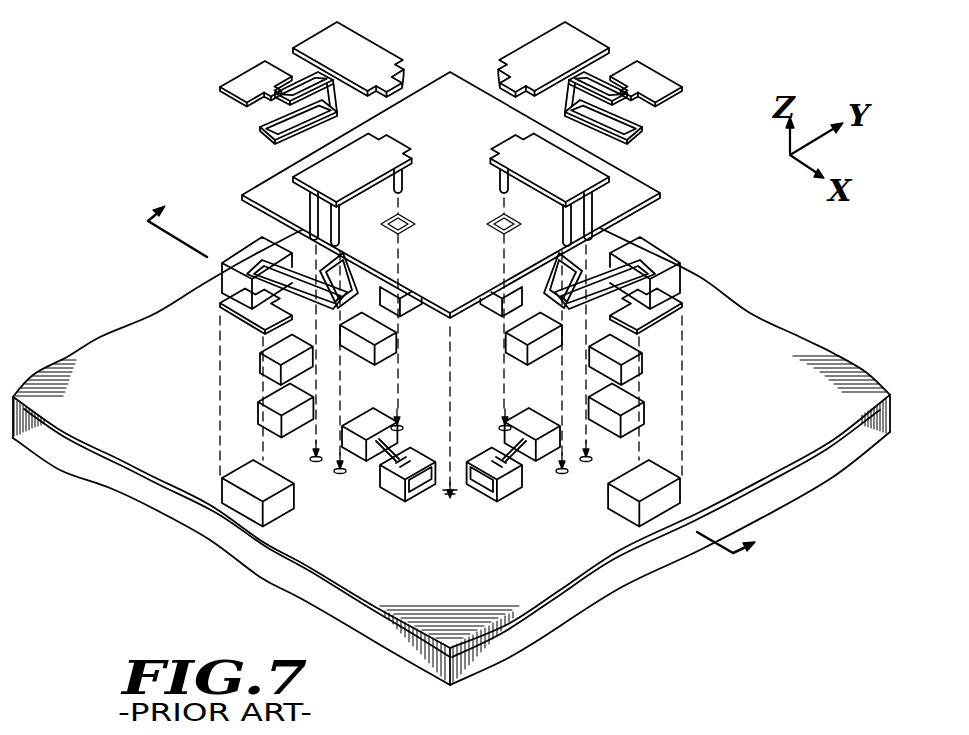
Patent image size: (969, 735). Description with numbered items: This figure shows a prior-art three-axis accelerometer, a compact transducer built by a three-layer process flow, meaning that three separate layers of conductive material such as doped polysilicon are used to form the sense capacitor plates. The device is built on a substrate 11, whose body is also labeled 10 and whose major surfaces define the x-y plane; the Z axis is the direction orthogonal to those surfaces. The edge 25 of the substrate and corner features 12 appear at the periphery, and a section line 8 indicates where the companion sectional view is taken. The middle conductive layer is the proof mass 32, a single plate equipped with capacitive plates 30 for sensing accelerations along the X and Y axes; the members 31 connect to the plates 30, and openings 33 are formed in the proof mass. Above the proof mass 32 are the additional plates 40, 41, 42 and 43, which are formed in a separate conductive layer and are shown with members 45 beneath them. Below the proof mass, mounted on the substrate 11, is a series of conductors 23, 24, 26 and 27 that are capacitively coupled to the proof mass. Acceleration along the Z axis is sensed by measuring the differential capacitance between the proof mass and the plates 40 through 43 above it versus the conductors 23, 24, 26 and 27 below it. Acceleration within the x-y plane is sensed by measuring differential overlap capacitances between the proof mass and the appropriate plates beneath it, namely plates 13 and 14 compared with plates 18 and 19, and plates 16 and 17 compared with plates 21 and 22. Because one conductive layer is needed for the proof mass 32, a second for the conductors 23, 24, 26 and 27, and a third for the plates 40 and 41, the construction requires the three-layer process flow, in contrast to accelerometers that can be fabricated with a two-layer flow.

The section line 8 is at (463, 369).
The substrate 10 is at (120, 570).
The substrate 11 is at (458, 580).
The bond pads 12 is at (226, 258).
The plate 13 is at (258, 406).
The plate 14 is at (414, 461).
The plate 16 is at (488, 461).
The plate 17 is at (644, 406).
The plate 18 is at (644, 363).
The plate 19 is at (488, 290).
The plate 21 is at (414, 290).
The plate 22 is at (258, 363).
The conductor 23 is at (373, 453).
The conductor 24 is at (529, 453).
The substrate rim edge 25 is at (166, 483).
The conductor 26 is at (548, 360).
The conductor 27 is at (354, 360).
The capacitive plates 30 is at (243, 70).
The serpentine springs 31 is at (265, 132).
The proof mass 32 is at (457, 142).
The plate holes 33 is at (486, 226).
The plate 40 is at (564, 178).
The plate 41 is at (362, 178).
The plate 42 is at (556, 67).
The plate 43 is at (368, 67).
The pins 45 is at (498, 180).